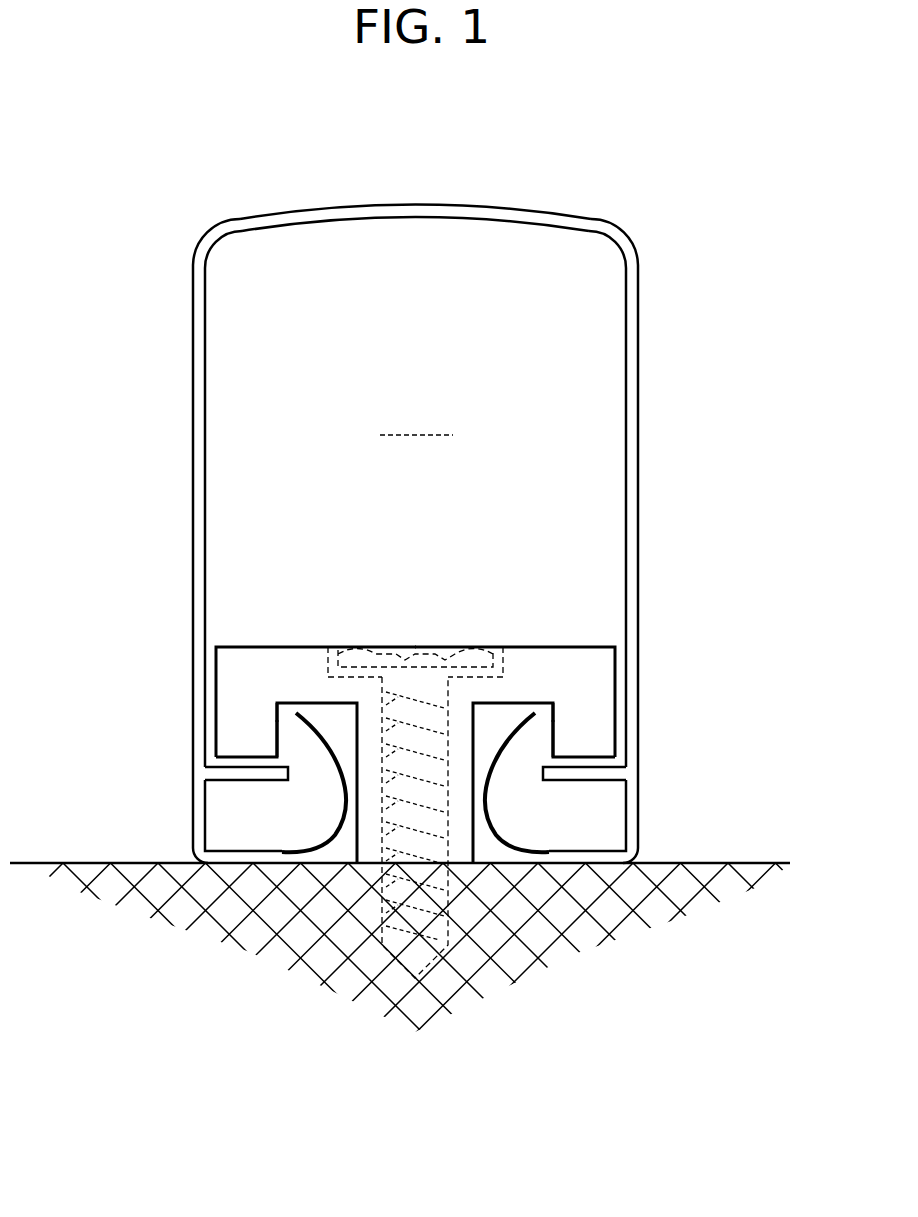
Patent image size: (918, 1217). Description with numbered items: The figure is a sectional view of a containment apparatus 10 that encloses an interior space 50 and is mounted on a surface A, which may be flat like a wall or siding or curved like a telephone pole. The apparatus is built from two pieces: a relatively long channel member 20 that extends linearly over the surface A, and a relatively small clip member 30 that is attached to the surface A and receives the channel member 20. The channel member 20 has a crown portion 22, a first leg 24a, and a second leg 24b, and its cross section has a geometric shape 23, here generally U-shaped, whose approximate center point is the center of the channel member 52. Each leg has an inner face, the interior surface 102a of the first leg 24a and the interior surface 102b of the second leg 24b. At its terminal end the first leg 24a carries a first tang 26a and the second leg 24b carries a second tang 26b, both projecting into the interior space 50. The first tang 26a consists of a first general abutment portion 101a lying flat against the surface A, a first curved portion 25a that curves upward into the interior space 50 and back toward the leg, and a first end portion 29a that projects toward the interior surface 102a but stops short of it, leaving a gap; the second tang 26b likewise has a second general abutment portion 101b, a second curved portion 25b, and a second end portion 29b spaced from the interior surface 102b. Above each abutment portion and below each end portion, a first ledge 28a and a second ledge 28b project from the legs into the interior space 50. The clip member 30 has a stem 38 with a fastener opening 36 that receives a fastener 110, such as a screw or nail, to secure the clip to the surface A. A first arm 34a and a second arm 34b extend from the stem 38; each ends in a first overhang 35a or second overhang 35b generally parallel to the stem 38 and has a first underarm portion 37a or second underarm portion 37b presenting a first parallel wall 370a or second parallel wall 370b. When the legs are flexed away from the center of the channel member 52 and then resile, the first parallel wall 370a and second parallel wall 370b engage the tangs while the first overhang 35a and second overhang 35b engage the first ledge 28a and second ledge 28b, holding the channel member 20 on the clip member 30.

The containment apparatus 10 is at (773, 452).
The channel member 20 is at (414, 571).
The crown portion 22 is at (469, 206).
The geometric shape 23 is at (247, 190).
The first leg 24a is at (638, 541).
The second leg 24b is at (193, 541).
The first curved portion 25a is at (513, 837).
The second curved portion 25b is at (318, 837).
The first tang 26a is at (510, 868).
The second tang 26b is at (322, 868).
The first ledge 28a is at (573, 774).
The second ledge 28b is at (257, 774).
The first end portion 29a is at (515, 742).
The second end portion 29b is at (316, 742).
The clip member 30 is at (414, 806).
The first arm 34a is at (587, 672).
The second arm 34b is at (245, 672).
The first overhang 35a is at (593, 745).
The second overhang 35b is at (238, 745).
The fastener opening 36 is at (331, 657).
The first underarm portion 37a is at (575, 703).
The second underarm portion 37b is at (250, 703).
The first parallel wall 370a is at (555, 723).
The second parallel wall 370b is at (277, 723).
The stem 38 is at (460, 850).
The interior space 50 is at (365, 385).
The center of the channel member 52 is at (438, 402).
The first general abutment portion 101a is at (603, 857).
The second general abutment portion 101b is at (228, 857).
The interior surface 102a is at (627, 556).
The interior surface 102b is at (207, 554).
The fastener 110 is at (433, 657).
The surface A is at (778, 845).